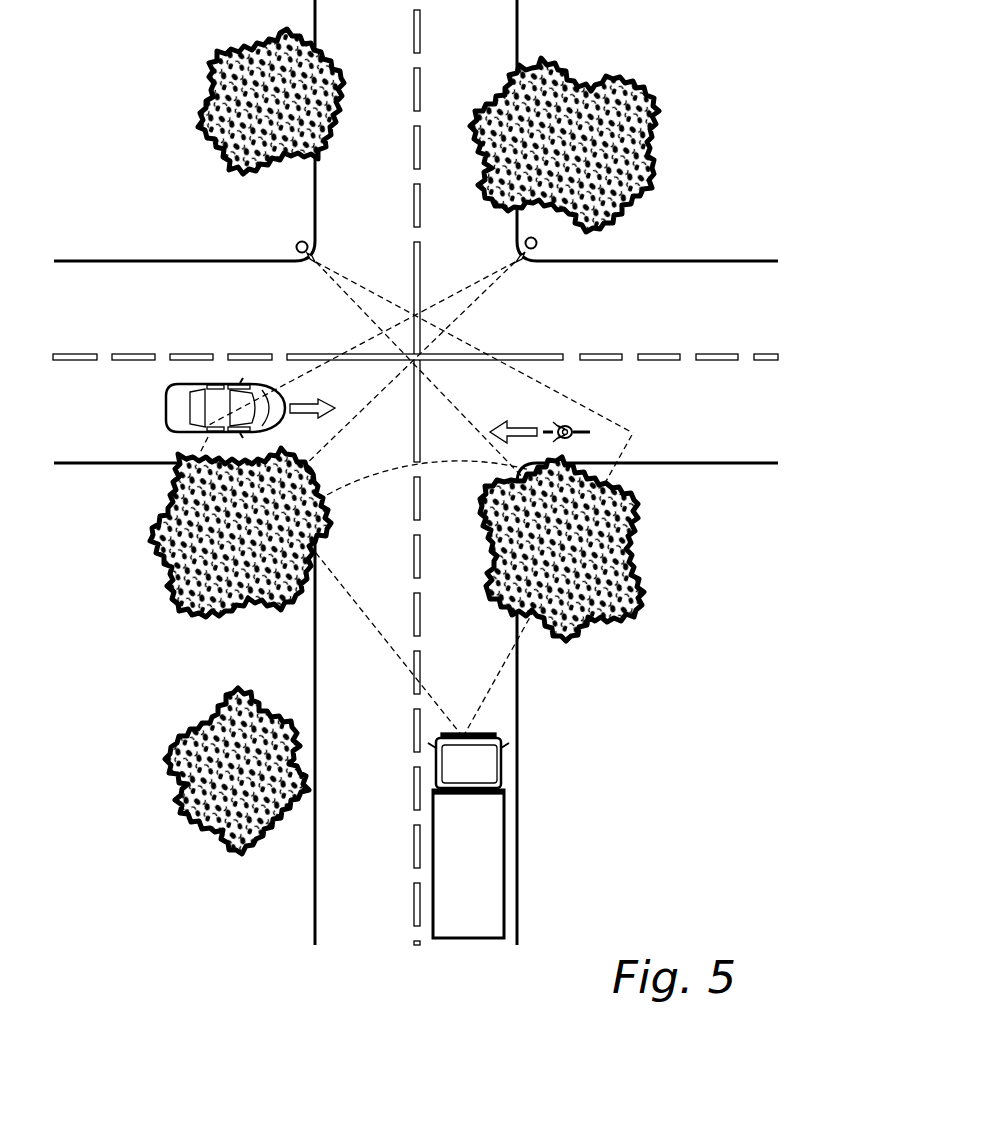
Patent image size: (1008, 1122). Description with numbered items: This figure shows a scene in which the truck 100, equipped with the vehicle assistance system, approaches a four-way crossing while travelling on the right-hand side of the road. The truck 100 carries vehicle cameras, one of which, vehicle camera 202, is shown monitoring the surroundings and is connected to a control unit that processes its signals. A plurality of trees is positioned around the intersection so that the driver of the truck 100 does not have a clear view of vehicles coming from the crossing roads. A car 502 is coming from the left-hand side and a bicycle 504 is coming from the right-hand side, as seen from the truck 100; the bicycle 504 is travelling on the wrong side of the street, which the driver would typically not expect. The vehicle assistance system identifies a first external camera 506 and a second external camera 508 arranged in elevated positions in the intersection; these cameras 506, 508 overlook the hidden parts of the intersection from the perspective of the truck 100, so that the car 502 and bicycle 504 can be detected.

The truck 100 is at (500, 840).
The vehicle camera 202 is at (467, 735).
The car 502 is at (176, 415).
The bicycle 504 is at (590, 432).
The first external camera 506 is at (537, 246).
The second external camera 508 is at (296, 247).